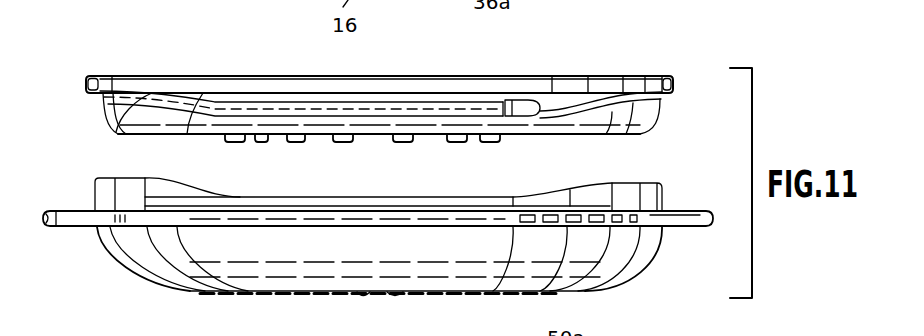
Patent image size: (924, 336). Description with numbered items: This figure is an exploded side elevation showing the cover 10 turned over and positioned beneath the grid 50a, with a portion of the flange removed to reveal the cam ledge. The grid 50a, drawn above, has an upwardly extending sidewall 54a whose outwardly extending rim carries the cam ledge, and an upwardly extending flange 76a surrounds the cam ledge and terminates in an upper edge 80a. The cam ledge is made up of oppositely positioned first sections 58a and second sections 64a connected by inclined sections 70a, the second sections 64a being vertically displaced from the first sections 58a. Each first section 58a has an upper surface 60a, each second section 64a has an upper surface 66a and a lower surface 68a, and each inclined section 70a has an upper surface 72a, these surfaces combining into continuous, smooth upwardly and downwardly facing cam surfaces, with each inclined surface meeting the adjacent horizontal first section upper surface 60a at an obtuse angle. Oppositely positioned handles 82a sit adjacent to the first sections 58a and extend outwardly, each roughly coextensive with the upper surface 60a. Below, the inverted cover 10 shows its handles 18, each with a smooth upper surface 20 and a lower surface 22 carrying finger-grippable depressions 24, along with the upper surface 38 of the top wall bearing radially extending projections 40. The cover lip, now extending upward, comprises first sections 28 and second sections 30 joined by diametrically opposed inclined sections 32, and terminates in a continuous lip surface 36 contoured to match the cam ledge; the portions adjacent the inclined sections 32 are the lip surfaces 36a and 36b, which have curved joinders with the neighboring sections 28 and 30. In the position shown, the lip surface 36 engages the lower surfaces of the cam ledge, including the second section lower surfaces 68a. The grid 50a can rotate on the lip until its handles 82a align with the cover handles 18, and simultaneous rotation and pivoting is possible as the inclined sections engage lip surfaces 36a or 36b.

The cover 10 is at (105, 258).
The handles 18 is at (712, 220).
The upper surface 20 is at (681, 228).
The lower surface 22 is at (708, 211).
The depressions 24 is at (665, 331).
The first sections 28 is at (128, 192).
The second sections 30 is at (388, 203).
The inclined sections 32 is at (181, 195).
The lip surface 36 is at (292, 197).
The lip surface 36a is at (609, 182).
The lip surface 36b is at (160, 179).
The upper surface 38 is at (372, 294).
The projections 40 is at (393, 294).
The grid 50a is at (588, 62).
The sidewall 54a is at (648, 125).
The first sections 58a is at (258, 118).
The upper surface 60a is at (228, 106).
The second sections 64a is at (100, 97).
The upper surface 66a is at (112, 76).
The lower surface 68a is at (665, 97).
The inclined sections 70a is at (117, 135).
The upper surface 72a is at (176, 103).
The flange 76a is at (433, 83).
The upper edge 80a is at (500, 77).
The handles 82a is at (373, 107).